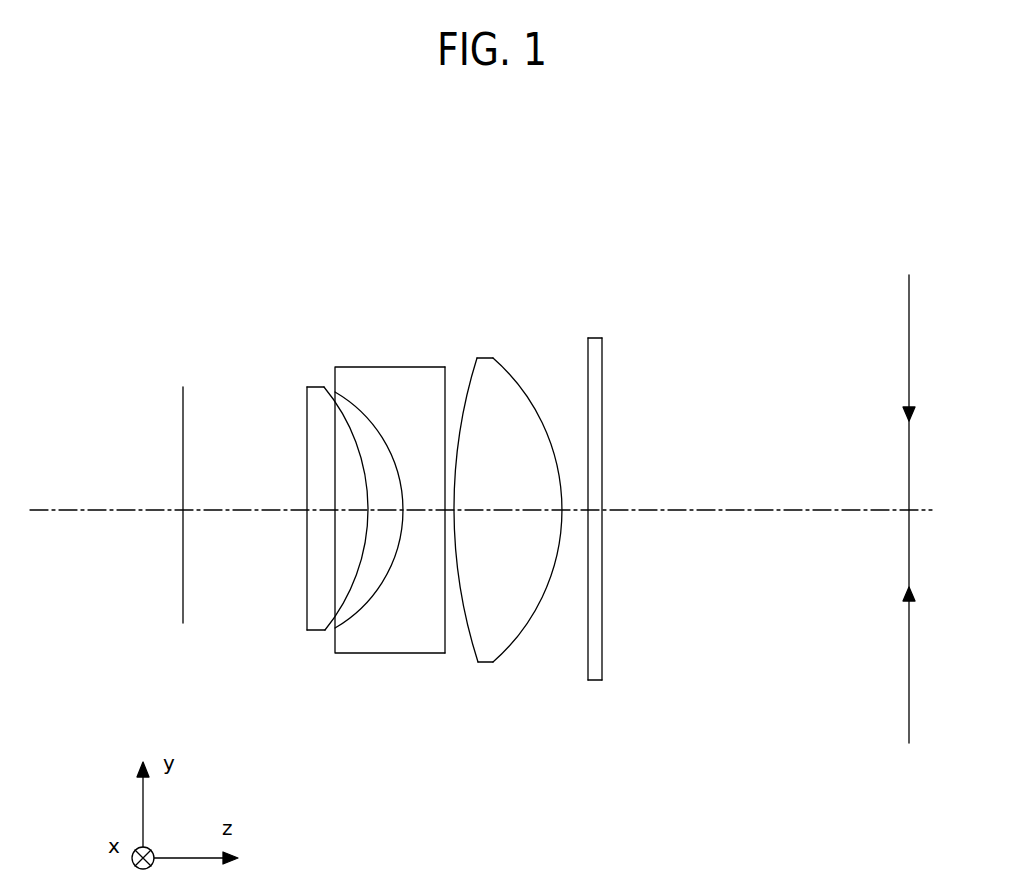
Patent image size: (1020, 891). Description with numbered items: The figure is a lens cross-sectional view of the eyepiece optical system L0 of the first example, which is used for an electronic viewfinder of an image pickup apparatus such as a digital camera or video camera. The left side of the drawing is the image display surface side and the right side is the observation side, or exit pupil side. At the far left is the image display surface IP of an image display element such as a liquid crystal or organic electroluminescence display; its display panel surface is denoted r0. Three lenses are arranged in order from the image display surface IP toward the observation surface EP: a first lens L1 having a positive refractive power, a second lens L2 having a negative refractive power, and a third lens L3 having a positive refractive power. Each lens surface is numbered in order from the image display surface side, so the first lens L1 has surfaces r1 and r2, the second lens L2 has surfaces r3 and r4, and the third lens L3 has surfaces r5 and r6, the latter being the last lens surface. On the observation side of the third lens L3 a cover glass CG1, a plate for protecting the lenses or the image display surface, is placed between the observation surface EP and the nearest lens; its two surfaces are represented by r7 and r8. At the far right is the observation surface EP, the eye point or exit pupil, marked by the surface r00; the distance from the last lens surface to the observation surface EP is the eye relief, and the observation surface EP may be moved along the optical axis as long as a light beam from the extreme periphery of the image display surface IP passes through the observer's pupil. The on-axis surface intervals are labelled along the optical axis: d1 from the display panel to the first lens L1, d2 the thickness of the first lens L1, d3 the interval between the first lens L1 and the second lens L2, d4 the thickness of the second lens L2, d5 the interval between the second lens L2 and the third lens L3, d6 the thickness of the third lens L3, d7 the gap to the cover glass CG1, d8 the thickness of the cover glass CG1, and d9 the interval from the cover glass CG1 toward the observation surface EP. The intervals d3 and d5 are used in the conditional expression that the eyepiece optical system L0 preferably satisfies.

The image display surface IP is at (145, 511).
The eyepiece optical system L0 is at (288, 290).
The first lens L1 is at (306, 504).
The second lens L2 is at (390, 521).
The third lens L3 is at (506, 516).
The cover glass CG1 is at (607, 507).
The observation surface EP is at (904, 509).
The display panel r0 is at (183, 623).
The first surface r1 is at (308, 615).
The second surface r2 is at (325, 632).
The third surface r3 is at (347, 618).
The fourth surface r4 is at (443, 638).
The fifth surface r5 is at (477, 648).
The sixth surface r6 is at (513, 638).
The seventh surface r7 is at (588, 680).
The eighth surface r8 is at (602, 680).
The observation surface r00 is at (909, 620).
The on-axis surface interval d1 is at (245, 501).
The on-axis surface interval d2 is at (333, 501).
The on-axis surface interval d3 is at (380, 513).
The on-axis surface interval d4 is at (467, 553).
The on-axis surface interval d5 is at (499, 560).
The on-axis surface interval d6 is at (508, 501).
The on-axis surface interval d7 is at (573, 512).
The on-axis surface interval d8 is at (593, 501).
The on-axis surface interval d9 is at (748, 501).